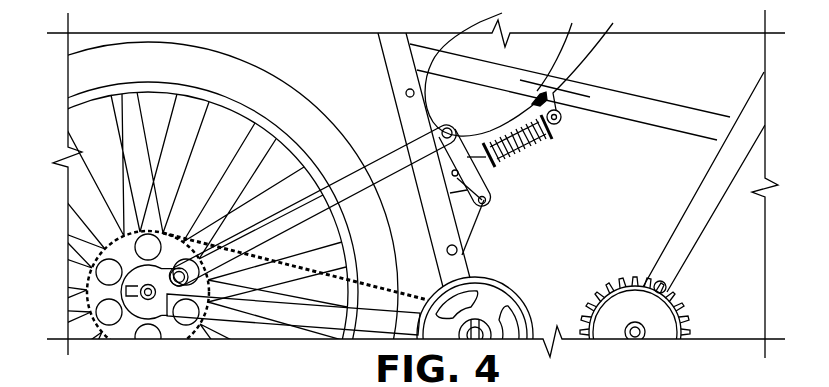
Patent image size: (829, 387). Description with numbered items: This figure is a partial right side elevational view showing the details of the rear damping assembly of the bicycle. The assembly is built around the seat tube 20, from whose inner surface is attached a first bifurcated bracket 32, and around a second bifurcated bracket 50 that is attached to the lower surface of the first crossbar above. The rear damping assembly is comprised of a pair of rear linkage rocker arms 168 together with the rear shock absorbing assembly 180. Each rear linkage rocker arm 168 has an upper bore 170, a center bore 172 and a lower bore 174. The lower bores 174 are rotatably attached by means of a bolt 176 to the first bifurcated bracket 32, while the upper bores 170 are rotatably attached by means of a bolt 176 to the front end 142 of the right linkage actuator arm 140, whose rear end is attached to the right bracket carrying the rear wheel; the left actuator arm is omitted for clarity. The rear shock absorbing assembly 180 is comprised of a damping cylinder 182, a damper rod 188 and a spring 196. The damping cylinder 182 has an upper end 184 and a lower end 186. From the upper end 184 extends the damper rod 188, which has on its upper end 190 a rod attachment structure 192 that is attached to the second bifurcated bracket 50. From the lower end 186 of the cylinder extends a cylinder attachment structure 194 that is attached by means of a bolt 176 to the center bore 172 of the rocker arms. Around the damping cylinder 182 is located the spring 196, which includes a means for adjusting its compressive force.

The right linkage actuator arm 140 is at (353, 178).
The seat tube 20 is at (392, 48).
The second bifurcated bracket 50 is at (640, 95).
The first bifurcated bracket 32 is at (467, 222).
The lower bore 174 is at (493, 213).
The center bore 172 is at (453, 175).
The bolt 176 is at (424, 144).
The damping cylinder 182 is at (463, 143).
The damper rod 188 is at (588, 130).
The front end 142 is at (489, 69).
The upper bore 170 is at (583, 56).
The rear shock absorbing assembly 180 is at (553, 107).
The upper end 184 is at (586, 87).
The upper end 190 is at (562, 128).
The rod attachment structure 192 is at (609, 140).
The spring 196 is at (520, 150).
The lower end 186 is at (460, 174).
The cylinder attachment structure 194 is at (572, 224).
The rear linkage rocker arm 168 is at (470, 183).